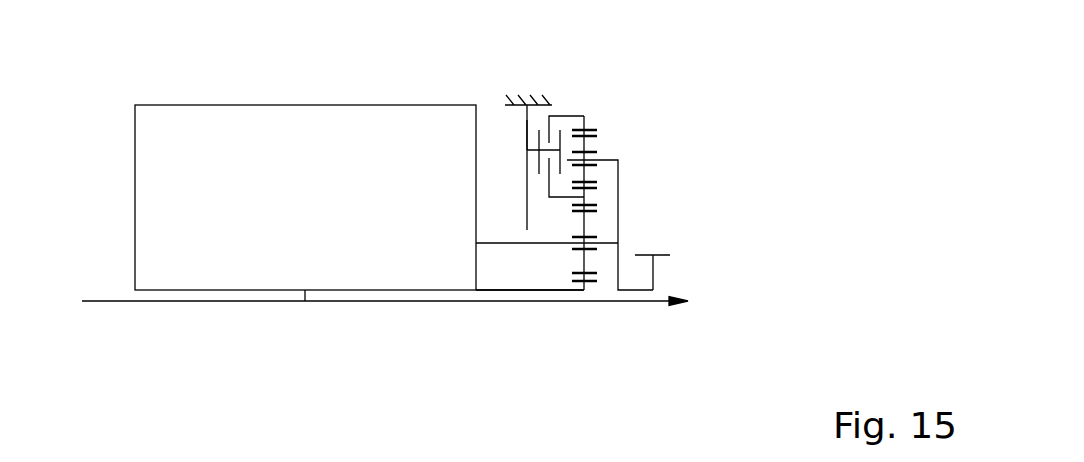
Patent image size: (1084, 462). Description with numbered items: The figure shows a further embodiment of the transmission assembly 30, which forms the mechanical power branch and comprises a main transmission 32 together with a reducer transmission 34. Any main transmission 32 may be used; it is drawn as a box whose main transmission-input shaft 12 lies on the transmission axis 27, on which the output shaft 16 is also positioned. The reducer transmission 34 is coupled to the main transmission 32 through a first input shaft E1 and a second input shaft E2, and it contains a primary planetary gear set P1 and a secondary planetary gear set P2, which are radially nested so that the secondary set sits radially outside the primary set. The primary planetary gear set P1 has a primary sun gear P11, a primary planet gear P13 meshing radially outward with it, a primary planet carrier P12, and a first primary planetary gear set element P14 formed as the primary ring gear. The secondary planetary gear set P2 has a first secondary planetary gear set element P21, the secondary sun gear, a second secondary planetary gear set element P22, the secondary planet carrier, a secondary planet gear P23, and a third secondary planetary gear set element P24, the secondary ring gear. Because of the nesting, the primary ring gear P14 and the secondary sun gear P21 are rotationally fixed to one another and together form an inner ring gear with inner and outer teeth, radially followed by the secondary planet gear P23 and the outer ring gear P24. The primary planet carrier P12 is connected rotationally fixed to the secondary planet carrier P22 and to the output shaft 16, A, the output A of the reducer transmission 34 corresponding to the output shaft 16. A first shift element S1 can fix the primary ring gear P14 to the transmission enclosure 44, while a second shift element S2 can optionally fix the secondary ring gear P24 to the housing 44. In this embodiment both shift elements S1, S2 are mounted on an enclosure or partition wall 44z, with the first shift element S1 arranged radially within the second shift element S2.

The main transmission 32 is at (205, 142).
The main transmission-input shaft 12 is at (367, 368).
The transmission axis 27 is at (108, 303).
The first shift element S1 is at (513, 157).
The enclosure or partition wall 44z is at (526, 136).
The transmission enclosure 44 is at (517, 101).
The second shift element S2 is at (563, 104).
The transmission assembly 30 is at (652, 220).
The reducer transmission 34 is at (652, 259).
The third secondary planetary gear set element P24 is at (584, 123).
The secondary planet gear P23 is at (584, 145).
The second secondary planetary gear set element P22 is at (709, 225).
The primary planet carrier P12 is at (618, 205).
The first primary planetary gear set element P14 is at (524, 310).
The first secondary planetary gear set element P21 is at (560, 197).
The primary planet gear P13 is at (586, 262).
The primary sun gear P11 is at (588, 286).
The primary planetary gear set P1 is at (583, 251).
The secondary planetary gear set P2 is at (583, 319).
The output shaft 16 is at (719, 269).
The output shaft of the reducer transmission A is at (670, 254).
The first input shaft E1 is at (496, 289).
The second input shaft E2 is at (510, 243).